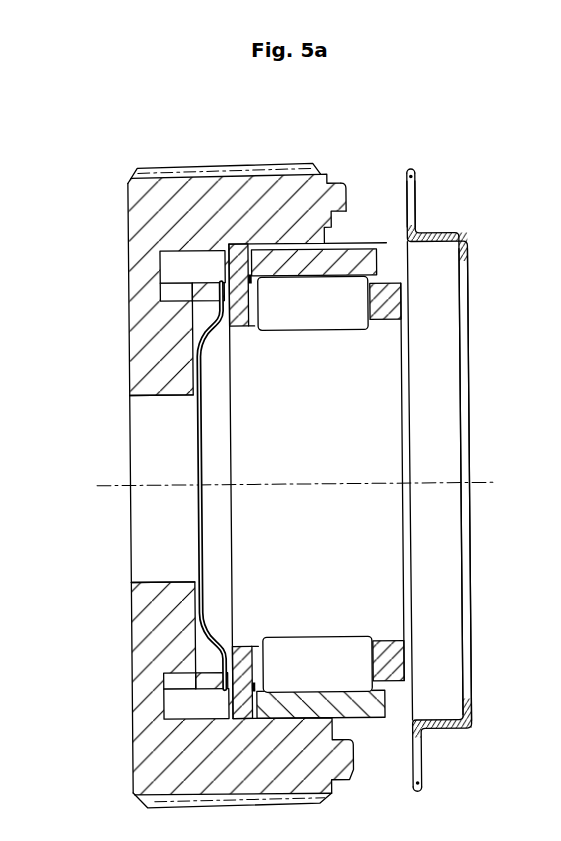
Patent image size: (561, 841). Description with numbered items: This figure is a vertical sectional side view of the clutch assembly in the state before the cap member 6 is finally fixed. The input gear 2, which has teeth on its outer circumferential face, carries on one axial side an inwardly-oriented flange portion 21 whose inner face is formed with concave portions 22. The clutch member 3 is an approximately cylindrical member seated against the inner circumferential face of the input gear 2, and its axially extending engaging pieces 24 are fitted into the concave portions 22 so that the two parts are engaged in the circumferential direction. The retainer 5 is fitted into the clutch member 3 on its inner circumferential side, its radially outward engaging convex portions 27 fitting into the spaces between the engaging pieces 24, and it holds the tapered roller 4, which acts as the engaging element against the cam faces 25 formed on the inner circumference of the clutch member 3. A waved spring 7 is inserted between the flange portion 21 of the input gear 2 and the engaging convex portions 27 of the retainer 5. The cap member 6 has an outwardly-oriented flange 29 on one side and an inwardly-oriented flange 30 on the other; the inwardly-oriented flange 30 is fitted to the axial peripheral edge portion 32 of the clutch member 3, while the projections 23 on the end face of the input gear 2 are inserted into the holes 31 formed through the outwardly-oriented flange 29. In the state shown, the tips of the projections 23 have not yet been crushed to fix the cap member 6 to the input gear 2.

The input gear 2 is at (129, 212).
The clutch member 3 is at (287, 238).
The tapered roller 4 is at (310, 322).
The retainer 5 is at (385, 322).
The cap member 6 is at (468, 232).
The waved spring 7 is at (209, 332).
The flange portion 21 is at (199, 395).
The concave portion 22 is at (163, 257).
The projection 23 is at (351, 190).
The engaging piece 24 is at (190, 266).
The cam face 25 is at (320, 292).
The engaging convex portion 27 is at (221, 263).
The outwardly-oriented flange 29 is at (411, 173).
The inwardly-oriented flange 30 is at (452, 260).
The hole 31 is at (419, 202).
The axial peripheral edge portion 32 is at (383, 247).